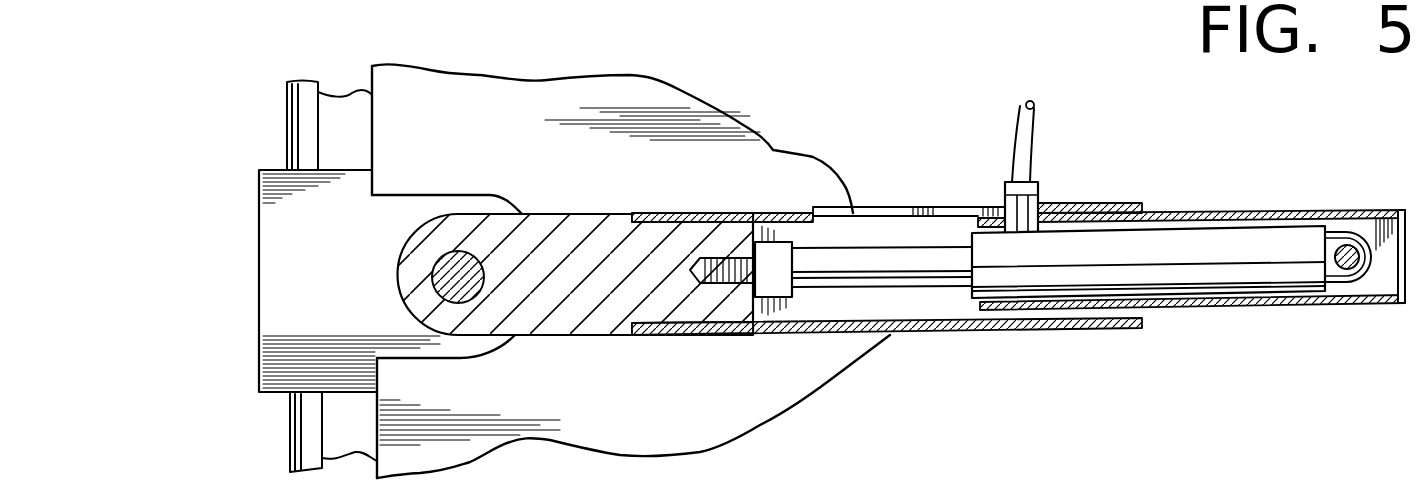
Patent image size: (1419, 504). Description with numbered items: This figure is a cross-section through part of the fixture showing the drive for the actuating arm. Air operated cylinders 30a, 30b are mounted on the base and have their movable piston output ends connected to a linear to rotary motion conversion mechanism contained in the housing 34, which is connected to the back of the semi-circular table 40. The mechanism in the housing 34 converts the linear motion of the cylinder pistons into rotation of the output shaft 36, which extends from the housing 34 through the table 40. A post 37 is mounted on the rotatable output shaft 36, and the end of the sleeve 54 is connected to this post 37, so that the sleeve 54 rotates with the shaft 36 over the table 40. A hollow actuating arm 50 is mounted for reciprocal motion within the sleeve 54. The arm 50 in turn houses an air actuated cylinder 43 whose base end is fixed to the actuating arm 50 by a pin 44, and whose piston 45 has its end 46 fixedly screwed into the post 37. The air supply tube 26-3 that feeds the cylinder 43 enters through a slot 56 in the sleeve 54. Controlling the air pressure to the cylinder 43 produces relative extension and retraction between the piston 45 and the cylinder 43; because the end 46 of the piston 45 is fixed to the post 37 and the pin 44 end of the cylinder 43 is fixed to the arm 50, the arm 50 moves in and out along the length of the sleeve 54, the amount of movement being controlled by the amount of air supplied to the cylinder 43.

The air operated cylinder 30a is at (302, 110).
The air operated cylinder 30b is at (302, 446).
The housing 34 is at (275, 328).
The output shaft 36 is at (448, 284).
The post 37 is at (552, 215).
The semi-circular table 40 is at (805, 165).
The piston end 46 is at (731, 258).
The piston 45 is at (806, 280).
The slot 56 is at (952, 205).
The air supply tube 26-3 is at (1025, 125).
The sleeve 54 is at (1112, 205).
The air actuated cylinder 43 is at (1066, 285).
The hollow actuating arm 50 is at (1212, 305).
The pin 44 is at (1343, 265).